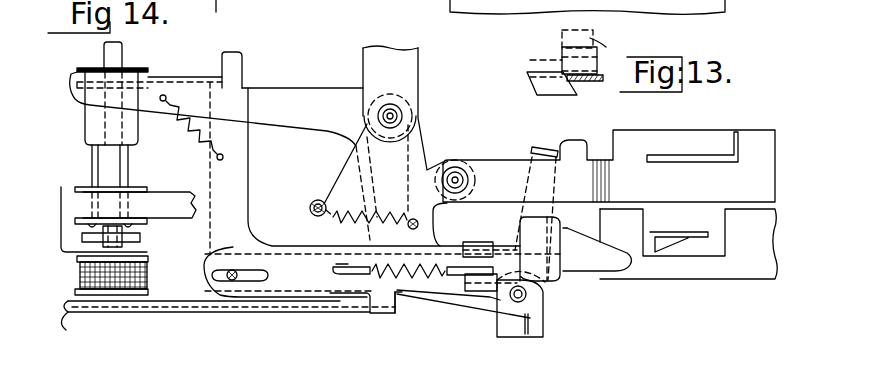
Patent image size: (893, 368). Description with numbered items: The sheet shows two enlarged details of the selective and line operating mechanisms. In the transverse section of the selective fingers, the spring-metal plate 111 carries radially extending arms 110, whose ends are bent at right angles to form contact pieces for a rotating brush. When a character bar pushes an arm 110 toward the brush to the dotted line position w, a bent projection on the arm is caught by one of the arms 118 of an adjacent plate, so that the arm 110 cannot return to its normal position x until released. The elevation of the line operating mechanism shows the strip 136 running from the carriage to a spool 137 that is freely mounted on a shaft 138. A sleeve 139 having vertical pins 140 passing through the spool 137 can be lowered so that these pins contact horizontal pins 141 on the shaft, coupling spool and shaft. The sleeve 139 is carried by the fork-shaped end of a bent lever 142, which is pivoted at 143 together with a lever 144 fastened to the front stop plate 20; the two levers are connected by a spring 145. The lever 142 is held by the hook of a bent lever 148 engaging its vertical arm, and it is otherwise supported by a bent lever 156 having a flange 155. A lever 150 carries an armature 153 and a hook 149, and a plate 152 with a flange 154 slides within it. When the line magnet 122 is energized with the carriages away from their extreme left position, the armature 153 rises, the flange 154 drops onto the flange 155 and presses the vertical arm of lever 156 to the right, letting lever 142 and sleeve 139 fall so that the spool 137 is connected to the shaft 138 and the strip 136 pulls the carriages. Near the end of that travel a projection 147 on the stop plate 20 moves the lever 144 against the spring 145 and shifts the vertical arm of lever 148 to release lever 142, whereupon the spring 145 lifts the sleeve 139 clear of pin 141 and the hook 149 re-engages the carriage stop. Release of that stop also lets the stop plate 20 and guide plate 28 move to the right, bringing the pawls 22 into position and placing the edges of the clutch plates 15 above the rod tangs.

In FIG. 14, the shaft 138 is at (115, 58).
In FIG. 14, the sleeve 139 is at (97, 67).
In FIG. 14, the bent lever 142 is at (220, 163).
In FIG. 14, the bent lever 156 is at (238, 72).
In FIG. 14, the pivot 143 is at (403, 130).
In FIG. 14, the lever 144 is at (339, 178).
In FIG. 14, the spring 145 is at (323, 216).
In FIG. 14, the vertical pins 140 is at (129, 158).
In FIG. 14, the spool 137 is at (141, 189).
In FIG. 14, the strip 136 is at (139, 205).
In FIG. 14, the horizontal pins 141 is at (141, 241).
In FIG. 14, the line magnet 122 is at (80, 262).
In FIG. 14, the lever 150 is at (147, 301).
In FIG. 14, the armature 153 is at (85, 323).
In FIG. 14, the plate 152 is at (530, 229).
In FIG. 14, the flange 154 is at (369, 308).
In FIG. 14, the flange 155 is at (397, 313).
In FIG. 14, the bent lever 148 is at (468, 300).
In FIG. 14, the hook 149 is at (577, 271).
In FIG. 14, the projection 147 is at (573, 143).
In FIG. 14, the front stop plate 20 is at (605, 166).
In FIG. 14, the pawls 22 is at (692, 147).
In FIG. 14, the guide plate 28 is at (688, 244).
In FIG. 14, the clutch plates 15 is at (670, 234).
In FIG. 13, the arms 110 is at (562, 50).
In FIG. 13, the dotted line position w is at (535, 57).
In FIG. 13, the normal position x is at (606, 46).
In FIG. 13, the plate 111 is at (538, 85).
In FIG. 13, the arms 118 is at (582, 82).